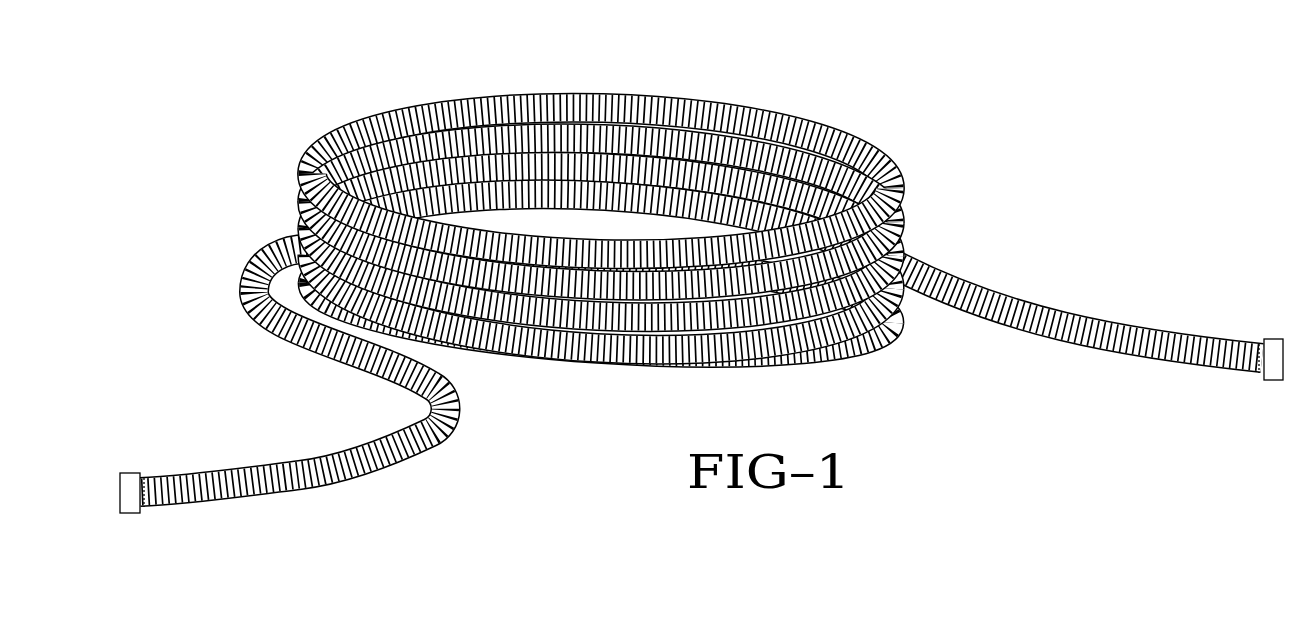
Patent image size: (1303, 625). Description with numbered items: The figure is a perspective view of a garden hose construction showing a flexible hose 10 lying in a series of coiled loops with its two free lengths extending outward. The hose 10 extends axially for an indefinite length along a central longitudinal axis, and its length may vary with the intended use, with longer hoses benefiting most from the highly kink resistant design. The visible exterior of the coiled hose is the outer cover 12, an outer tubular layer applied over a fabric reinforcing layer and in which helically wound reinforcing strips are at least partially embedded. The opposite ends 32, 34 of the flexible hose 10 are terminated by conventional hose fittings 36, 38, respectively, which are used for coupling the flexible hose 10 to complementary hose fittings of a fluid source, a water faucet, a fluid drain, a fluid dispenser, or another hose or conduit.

The flexible hose 10 is at (221, 159).
The outer cover 12 is at (852, 112).
The first end of the flexible hose 32 is at (135, 513).
The second end of the flexible hose 34 is at (1264, 379).
The hose fitting 36 is at (128, 472).
The hose fitting 38 is at (1273, 339).